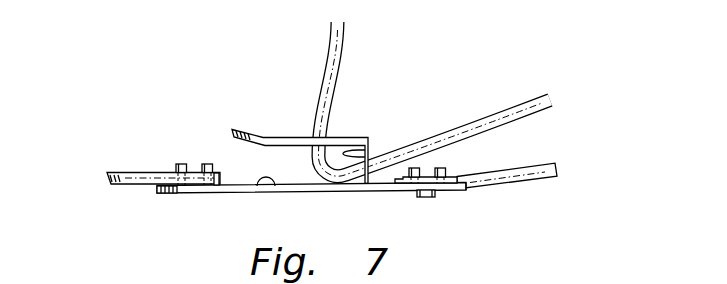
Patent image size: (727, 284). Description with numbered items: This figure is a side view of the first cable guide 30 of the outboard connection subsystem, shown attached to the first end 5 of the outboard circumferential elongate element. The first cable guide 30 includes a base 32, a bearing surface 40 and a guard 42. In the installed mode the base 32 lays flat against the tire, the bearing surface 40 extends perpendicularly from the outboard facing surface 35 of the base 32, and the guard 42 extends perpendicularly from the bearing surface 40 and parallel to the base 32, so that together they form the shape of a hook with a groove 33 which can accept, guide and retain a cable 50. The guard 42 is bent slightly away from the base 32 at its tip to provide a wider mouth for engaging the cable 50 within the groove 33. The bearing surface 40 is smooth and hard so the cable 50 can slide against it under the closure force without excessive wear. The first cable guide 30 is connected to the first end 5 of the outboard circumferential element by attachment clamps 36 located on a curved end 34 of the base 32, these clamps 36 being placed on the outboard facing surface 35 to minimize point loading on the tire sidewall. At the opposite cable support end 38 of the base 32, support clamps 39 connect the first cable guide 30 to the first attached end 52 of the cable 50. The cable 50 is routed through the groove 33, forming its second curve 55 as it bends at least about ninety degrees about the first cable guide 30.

The first end 5 is at (115, 172).
The first cable guide 30 is at (355, 103).
The base 32 is at (240, 189).
The groove 33 is at (178, 152).
The curved end 34 is at (160, 188).
The outboard facing surface 35 is at (272, 186).
The attachment clamps 36 is at (228, 157).
The cable support end 38 is at (474, 188).
The support clamps 39 is at (440, 167).
The bearing surface 40 is at (352, 154).
The guard 42 is at (300, 135).
The cable 50 is at (543, 176).
The first attached end 52 is at (399, 192).
The second curve 55 is at (333, 162).